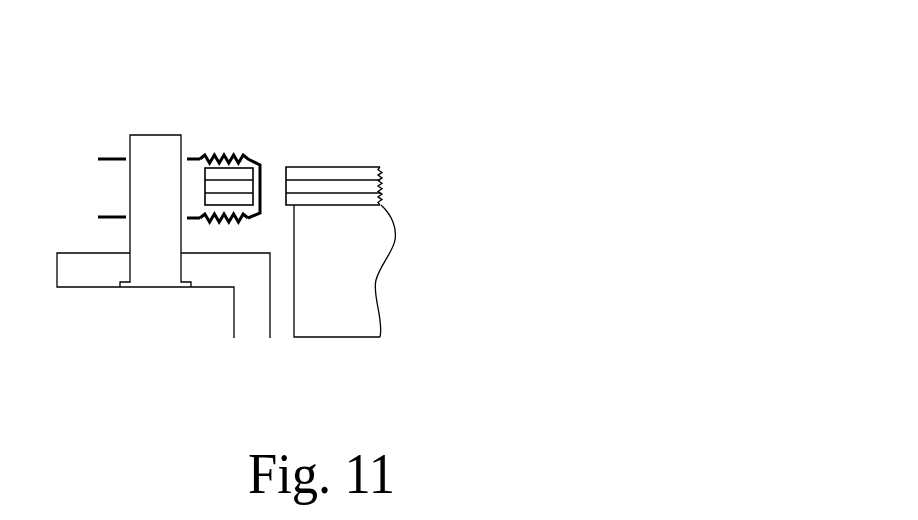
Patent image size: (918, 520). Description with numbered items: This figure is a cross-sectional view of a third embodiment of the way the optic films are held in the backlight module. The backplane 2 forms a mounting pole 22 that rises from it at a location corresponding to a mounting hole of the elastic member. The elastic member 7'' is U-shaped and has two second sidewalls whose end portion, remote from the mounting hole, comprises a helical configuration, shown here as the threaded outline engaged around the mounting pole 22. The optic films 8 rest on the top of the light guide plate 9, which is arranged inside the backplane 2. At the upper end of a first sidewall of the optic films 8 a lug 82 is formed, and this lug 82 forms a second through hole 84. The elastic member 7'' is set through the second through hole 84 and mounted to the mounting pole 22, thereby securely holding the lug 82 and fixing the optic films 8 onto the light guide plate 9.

The backplane 2 is at (97, 270).
The mounting pole 22 is at (153, 203).
The elastic member 7'' is at (221, 127).
The lug 82 is at (230, 180).
The second through hole 84 is at (277, 178).
The optic films 8 is at (337, 192).
The light guide plate 9 is at (332, 258).